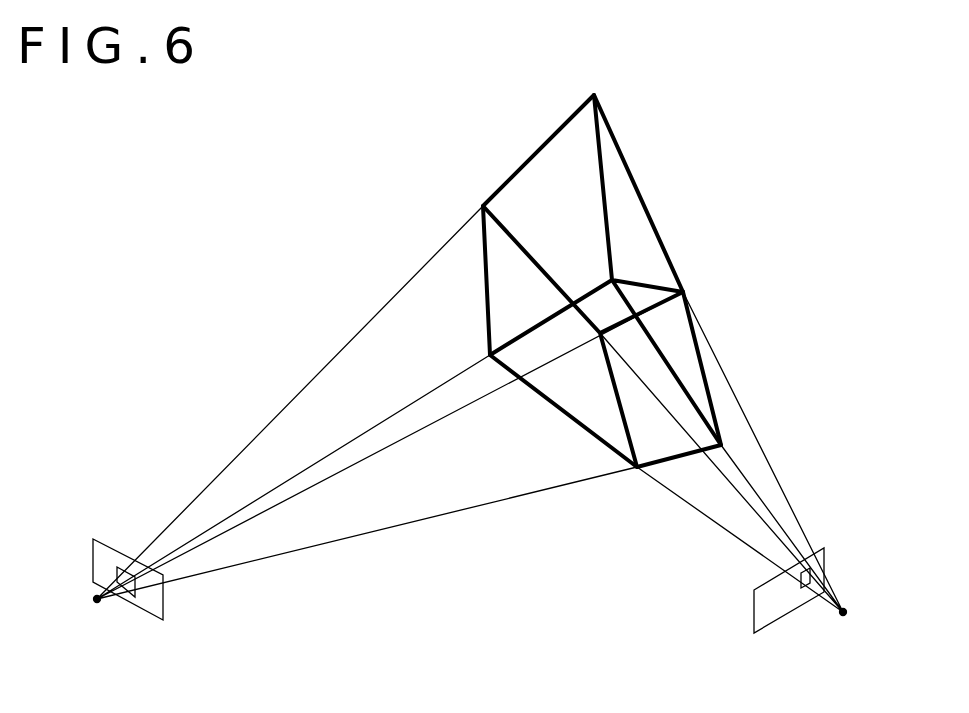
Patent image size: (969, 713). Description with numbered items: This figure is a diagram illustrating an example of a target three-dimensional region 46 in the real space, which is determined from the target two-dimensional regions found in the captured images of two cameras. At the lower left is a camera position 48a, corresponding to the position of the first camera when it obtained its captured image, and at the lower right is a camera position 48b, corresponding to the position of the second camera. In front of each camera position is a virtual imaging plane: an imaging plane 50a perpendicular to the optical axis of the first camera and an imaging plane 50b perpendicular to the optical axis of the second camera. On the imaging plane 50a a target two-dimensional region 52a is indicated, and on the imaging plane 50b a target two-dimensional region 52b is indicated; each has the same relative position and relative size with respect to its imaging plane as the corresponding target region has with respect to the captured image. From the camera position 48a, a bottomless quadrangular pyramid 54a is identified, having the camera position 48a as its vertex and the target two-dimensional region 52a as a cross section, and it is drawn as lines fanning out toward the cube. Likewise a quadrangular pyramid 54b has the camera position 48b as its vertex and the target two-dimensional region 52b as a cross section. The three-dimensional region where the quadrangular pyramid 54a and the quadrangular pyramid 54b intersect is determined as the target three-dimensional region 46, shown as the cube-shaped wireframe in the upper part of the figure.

The target three-dimensional region 46 is at (645, 199).
The camera position 48a is at (97, 603).
The imaging plane 50a is at (157, 607).
The target two-dimensional region 52a is at (128, 567).
The quadrangular pyramid 54a is at (383, 523).
The camera position 48b is at (843, 617).
The imaging plane 50b is at (767, 620).
The target two-dimensional region 52b is at (807, 571).
The quadrangular pyramid 54b is at (762, 477).